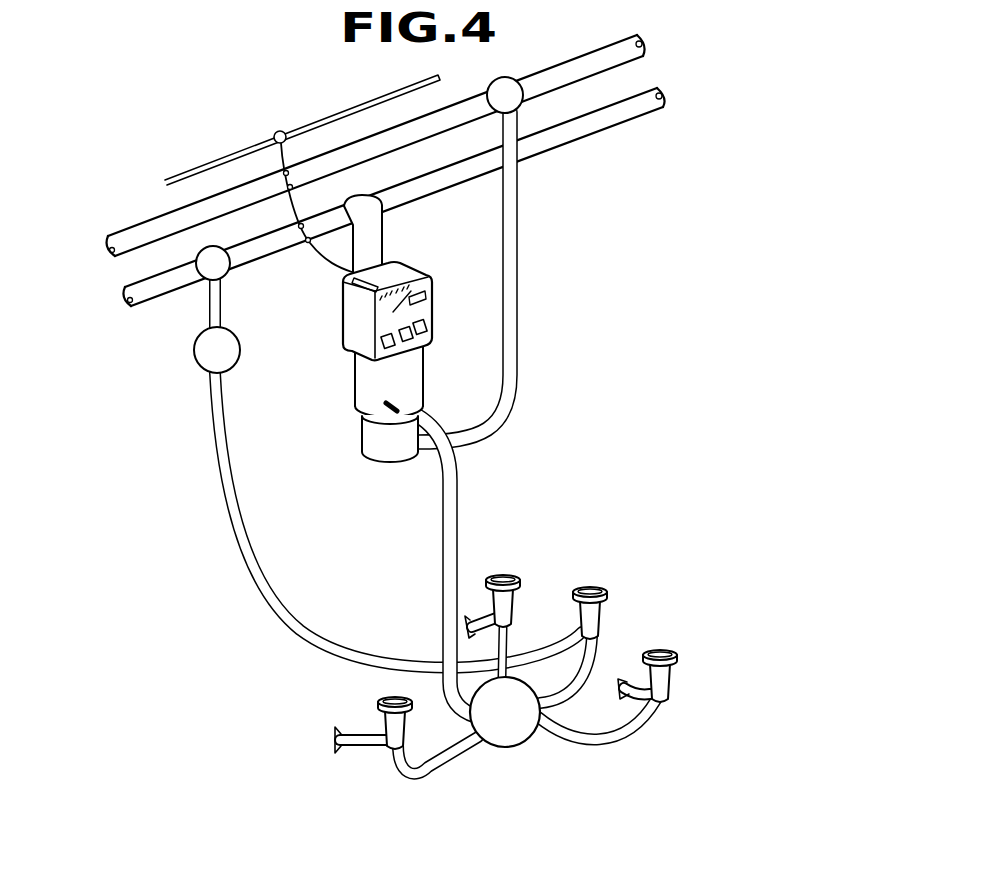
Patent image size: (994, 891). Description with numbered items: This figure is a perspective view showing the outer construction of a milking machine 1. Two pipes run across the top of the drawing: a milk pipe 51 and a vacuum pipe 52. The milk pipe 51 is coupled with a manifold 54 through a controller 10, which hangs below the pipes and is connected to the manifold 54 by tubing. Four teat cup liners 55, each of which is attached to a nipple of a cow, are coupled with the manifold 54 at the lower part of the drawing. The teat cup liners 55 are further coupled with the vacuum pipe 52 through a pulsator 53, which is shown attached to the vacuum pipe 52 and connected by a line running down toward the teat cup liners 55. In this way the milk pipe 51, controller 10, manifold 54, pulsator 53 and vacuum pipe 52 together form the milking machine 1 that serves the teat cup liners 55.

The milking machine 1 is at (590, 330).
The controller 10 is at (432, 300).
The milk pipe 51 is at (548, 78).
The vacuum pipe 52 is at (602, 124).
The pulsator 53 is at (193, 348).
The manifold 54 is at (525, 746).
The teat cup liners 55 is at (520, 586).